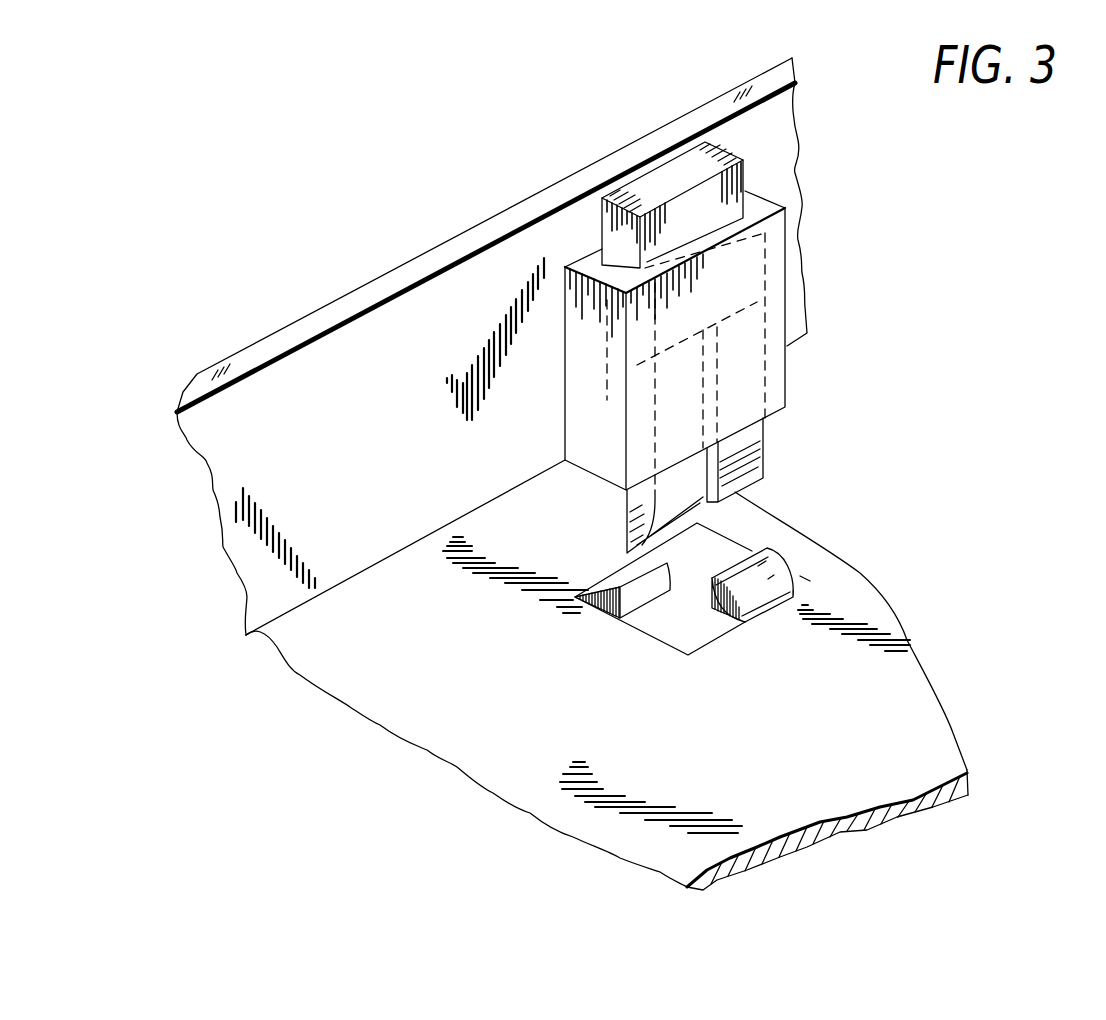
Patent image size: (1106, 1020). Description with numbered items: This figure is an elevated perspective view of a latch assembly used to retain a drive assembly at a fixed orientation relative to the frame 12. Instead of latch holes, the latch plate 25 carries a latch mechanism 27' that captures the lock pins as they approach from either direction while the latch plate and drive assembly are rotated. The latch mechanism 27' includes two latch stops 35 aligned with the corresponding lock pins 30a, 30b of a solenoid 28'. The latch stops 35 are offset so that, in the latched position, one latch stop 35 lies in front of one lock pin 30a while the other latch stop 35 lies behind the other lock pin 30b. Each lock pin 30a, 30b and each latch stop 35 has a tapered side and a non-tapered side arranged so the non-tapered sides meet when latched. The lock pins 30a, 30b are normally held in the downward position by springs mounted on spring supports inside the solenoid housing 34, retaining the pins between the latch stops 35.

The frame 12 is at (484, 272).
The latch plate 25 is at (937, 727).
The latch mechanism 27' is at (746, 589).
The solenoid 28' is at (714, 340).
The lock pin 30a is at (683, 482).
The lock pin 30b is at (765, 437).
The solenoid housing 34 is at (770, 195).
The latch stop 35 is at (715, 606).